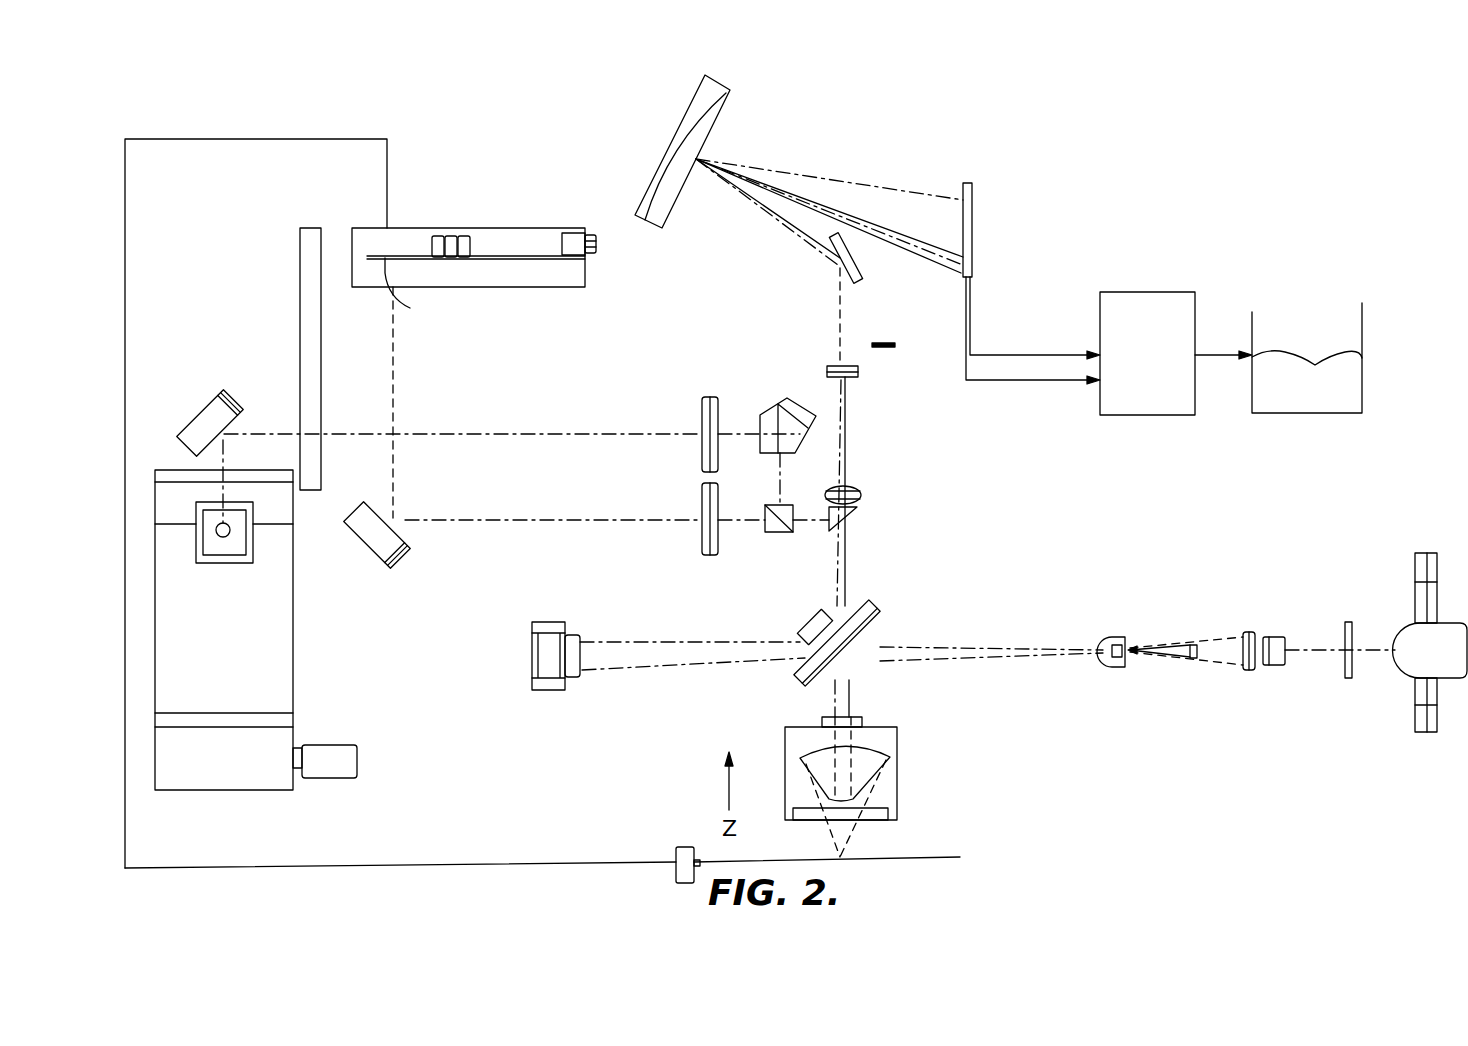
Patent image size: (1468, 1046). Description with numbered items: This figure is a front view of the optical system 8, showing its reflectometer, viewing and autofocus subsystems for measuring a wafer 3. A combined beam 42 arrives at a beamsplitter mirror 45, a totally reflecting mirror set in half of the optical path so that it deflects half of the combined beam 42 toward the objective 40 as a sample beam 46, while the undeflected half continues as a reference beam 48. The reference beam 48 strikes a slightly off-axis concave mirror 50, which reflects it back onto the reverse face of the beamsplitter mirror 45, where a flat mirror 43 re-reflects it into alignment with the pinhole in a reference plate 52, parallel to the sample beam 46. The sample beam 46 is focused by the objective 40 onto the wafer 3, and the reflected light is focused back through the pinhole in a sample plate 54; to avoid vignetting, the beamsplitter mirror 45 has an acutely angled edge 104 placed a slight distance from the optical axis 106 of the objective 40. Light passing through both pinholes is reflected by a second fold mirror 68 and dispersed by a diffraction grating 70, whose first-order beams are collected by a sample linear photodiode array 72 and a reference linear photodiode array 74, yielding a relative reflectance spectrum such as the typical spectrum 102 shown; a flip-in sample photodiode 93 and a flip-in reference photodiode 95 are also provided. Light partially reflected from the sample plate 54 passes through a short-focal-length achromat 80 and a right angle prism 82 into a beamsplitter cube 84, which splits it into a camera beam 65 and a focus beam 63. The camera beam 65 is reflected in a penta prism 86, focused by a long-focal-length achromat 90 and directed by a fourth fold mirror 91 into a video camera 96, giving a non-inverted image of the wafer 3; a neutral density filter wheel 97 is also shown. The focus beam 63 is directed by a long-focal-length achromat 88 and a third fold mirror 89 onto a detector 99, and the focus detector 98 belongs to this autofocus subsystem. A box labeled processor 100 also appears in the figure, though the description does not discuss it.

The optical system 8 is at (1051, 63).
The wafer 3 is at (928, 858).
The objective 40 is at (897, 790).
The combined beam 42 is at (990, 646).
The flat mirror 43 is at (806, 636).
The beamsplitter mirror 45 is at (872, 606).
The sample beam 46 is at (852, 690).
The reference beam 48 is at (693, 642).
The concave mirror 50 is at (566, 686).
The reference plate 52 is at (881, 384).
The sample plate 54 is at (852, 377).
The focus beam 63 is at (508, 522).
The camera beam 65 is at (518, 434).
The second fold mirror 68 is at (857, 281).
The diffraction grating 70 is at (712, 80).
The sample linear photodiode array 72 is at (1031, 283).
The reference linear photodiode array 74 is at (972, 270).
The achromat 80 is at (861, 497).
The right angle prism 82 is at (856, 513).
The beamsplitter cube 84 is at (776, 532).
The penta prism 86 is at (797, 398).
The achromat 88 is at (718, 497).
The third fold mirror 89 is at (394, 570).
The achromat 90 is at (716, 410).
The fourth fold mirror 91 is at (208, 402).
The flip-in sample photodiode 93 is at (916, 333).
The flip-in reference photodiode 95 is at (884, 343).
The video camera 96 is at (293, 620).
The neutral density filter wheel 97 is at (310, 228).
The focus detector 98 is at (392, 228).
The detector 99 is at (412, 388).
The processor 100 is at (1140, 292).
The relative reflectance spectrum 102 is at (1310, 362).
The edge 104 is at (262, 139).
The optical axis 106 is at (686, 847).